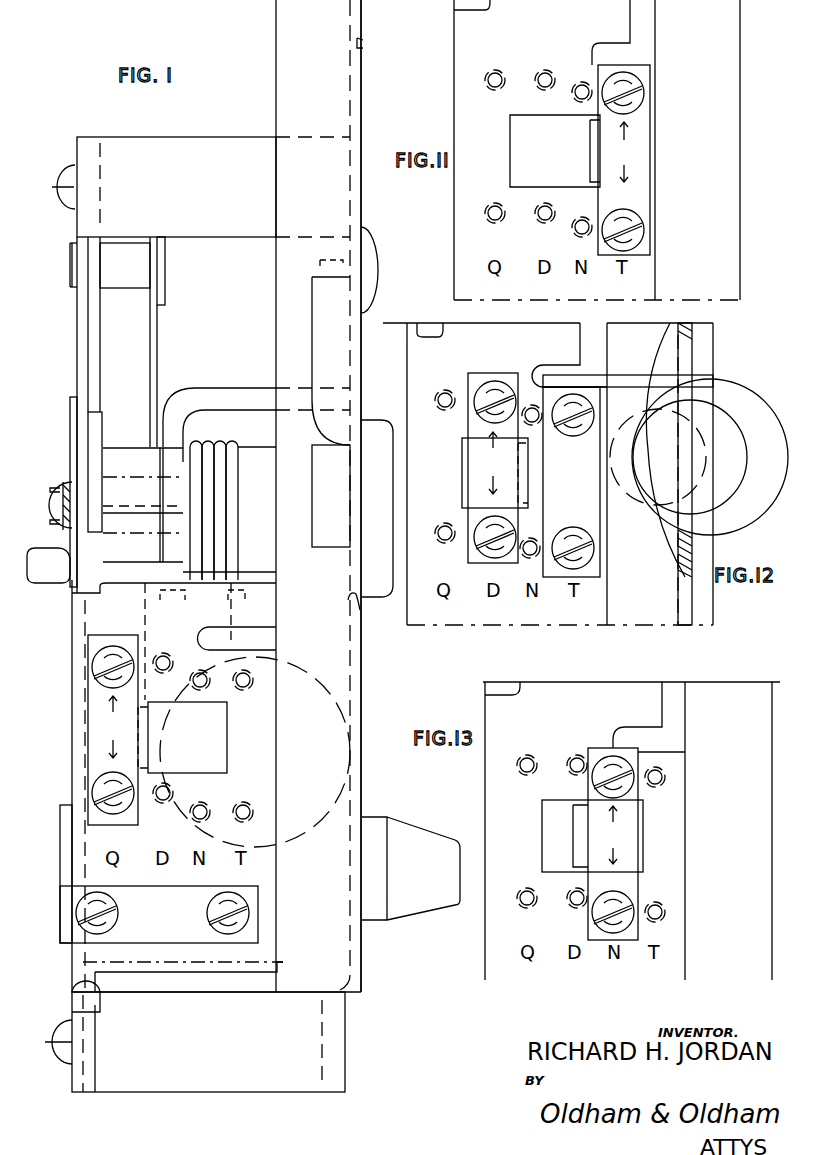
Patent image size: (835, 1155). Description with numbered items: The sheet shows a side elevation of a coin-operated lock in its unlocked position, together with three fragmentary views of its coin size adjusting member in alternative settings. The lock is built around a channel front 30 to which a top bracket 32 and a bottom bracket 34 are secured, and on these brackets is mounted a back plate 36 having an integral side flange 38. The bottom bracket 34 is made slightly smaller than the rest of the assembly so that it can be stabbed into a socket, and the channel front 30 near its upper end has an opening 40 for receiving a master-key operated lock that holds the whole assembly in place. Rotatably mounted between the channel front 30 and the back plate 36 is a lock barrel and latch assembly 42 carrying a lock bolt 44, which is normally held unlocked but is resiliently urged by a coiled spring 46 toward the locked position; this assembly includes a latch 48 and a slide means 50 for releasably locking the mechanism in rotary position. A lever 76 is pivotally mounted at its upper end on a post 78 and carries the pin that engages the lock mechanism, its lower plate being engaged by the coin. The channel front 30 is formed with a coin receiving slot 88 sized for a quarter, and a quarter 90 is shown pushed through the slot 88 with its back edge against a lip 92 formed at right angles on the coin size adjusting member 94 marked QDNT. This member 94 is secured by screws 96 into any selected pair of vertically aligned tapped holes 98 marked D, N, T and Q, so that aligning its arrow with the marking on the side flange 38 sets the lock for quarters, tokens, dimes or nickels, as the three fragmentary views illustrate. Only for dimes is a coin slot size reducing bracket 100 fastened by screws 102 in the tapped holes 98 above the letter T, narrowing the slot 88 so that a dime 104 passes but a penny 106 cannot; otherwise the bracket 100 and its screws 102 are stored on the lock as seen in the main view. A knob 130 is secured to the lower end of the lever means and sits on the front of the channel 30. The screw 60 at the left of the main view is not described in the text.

In FIG. 1, the channel front 30 is at (363, 30).
In FIG. 1, the top bracket 32 is at (213, 137).
In FIG. 1, the bottom bracket 34 is at (160, 1090).
In FIG. 1, the back plate 36 is at (80, 352).
In FIG. 1, the side flange 38 is at (112, 610).
In FIG. 1, the opening 40 is at (362, 46).
In FIG. 1, the lock barrel and latch assembly 42 is at (387, 411).
In FIG. 1, the lock bolt 44 is at (211, 396).
In FIG. 1, the coiled spring 46 is at (230, 492).
In FIG. 1, the latch 48 is at (124, 457).
In FIG. 1, the slide means 50 is at (52, 572).
In FIG. 1, the mounting screw 60 is at (55, 512).
In FIG. 1, the lever 76 is at (157, 342).
In FIG. 1, the post 78 is at (163, 294).
In FIG. 1, the coin receiving slot 88 is at (360, 612).
In FIG. 12, the coin receiving slot 88 is at (694, 350).
In FIG. 1, the quarter 90 is at (338, 730).
In FIG. 1, the lip 92 is at (150, 729).
In FIG. 1, the coin size adjusting member 94 is at (93, 690).
In FIG. 11, the coin size adjusting member 94 is at (640, 150).
In FIG. 12, the coin size adjusting member 94 is at (470, 463).
In FIG. 13, the coin size adjusting member 94 is at (632, 839).
In FIG. 1, the screws 96 is at (92, 663).
In FIG. 11, the screws 96 is at (642, 101).
In FIG. 12, the screws 96 is at (496, 381).
In FIG. 13, the screws 96 is at (604, 755).
In FIG. 1, the tapped holes 98 is at (160, 655).
In FIG. 11, the tapped holes 98 is at (545, 72).
In FIG. 12, the tapped holes 98 is at (445, 409).
In FIG. 13, the tapped holes 98 is at (655, 768).
In FIG. 1, the coin slot size reducing bracket 100 is at (60, 862).
In FIG. 12, the coin slot size reducing bracket 100 is at (592, 370).
In FIG. 1, the screws 102 is at (207, 907).
In FIG. 12, the screws 102 is at (572, 528).
In FIG. 12, the dime 104 is at (712, 402).
In FIG. 12, the penny 106 is at (762, 405).
In FIG. 1, the knob 130 is at (422, 830).